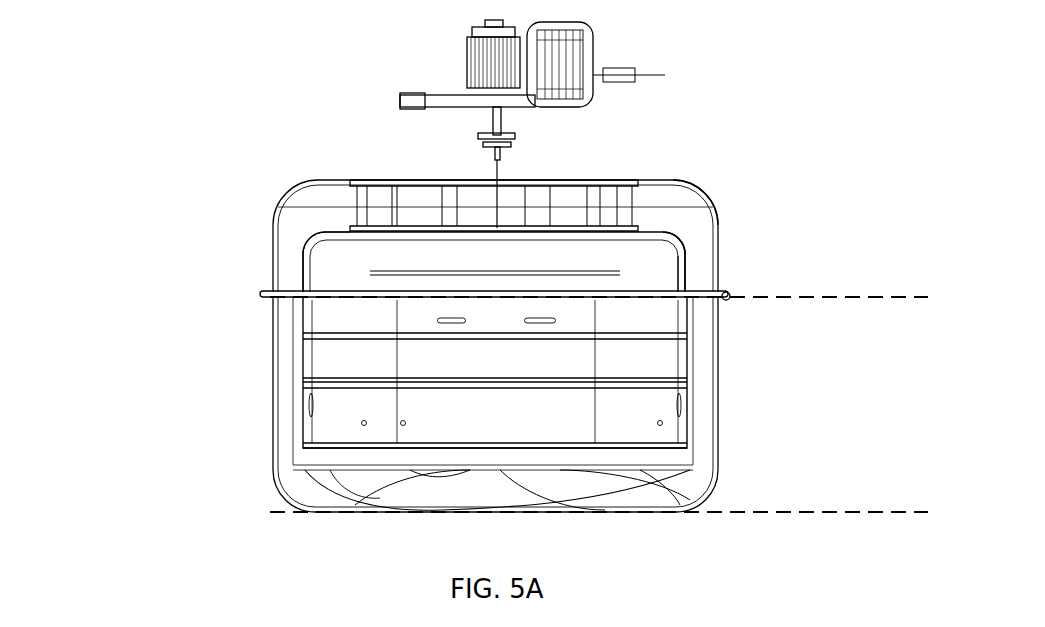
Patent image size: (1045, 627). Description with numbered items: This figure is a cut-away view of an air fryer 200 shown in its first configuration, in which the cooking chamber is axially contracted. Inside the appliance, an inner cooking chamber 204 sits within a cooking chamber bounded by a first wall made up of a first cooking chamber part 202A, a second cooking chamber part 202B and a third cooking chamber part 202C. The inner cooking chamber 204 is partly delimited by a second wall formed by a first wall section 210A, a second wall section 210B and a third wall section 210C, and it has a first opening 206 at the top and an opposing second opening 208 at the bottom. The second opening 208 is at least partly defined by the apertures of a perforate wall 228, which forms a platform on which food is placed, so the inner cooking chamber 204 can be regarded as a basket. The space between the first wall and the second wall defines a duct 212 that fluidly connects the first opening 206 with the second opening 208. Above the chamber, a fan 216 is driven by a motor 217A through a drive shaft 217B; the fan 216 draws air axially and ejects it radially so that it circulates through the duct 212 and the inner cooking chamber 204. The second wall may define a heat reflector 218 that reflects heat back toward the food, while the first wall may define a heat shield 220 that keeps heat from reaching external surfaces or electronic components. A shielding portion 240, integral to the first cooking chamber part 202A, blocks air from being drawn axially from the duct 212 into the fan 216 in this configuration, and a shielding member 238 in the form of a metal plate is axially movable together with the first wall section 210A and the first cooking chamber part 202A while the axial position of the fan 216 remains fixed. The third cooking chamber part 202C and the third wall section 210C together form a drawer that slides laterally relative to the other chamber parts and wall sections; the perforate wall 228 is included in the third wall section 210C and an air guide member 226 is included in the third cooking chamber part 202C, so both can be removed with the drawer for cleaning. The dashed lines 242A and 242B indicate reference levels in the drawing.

The air fryer 200 is at (167, 80).
The first cooking chamber part 202A is at (298, 258).
The second cooking chamber part 202B is at (272, 282).
The third cooking chamber part 202C is at (273, 428).
The inner cooking chamber 204 is at (618, 378).
The first opening 206 is at (605, 237).
The second opening 208 is at (388, 446).
The first wall section 210A is at (688, 255).
The second wall section 210B is at (680, 270).
The third wall section 210C is at (303, 370).
The duct 212 is at (697, 462).
The fan 216 is at (417, 207).
The motor 217A is at (490, 57).
The drive shaft 217B is at (497, 178).
The heat reflector 218 is at (300, 247).
The heat shield 220 is at (707, 197).
The air guide member 226 is at (577, 487).
The perforate wall 228 is at (437, 448).
The shielding member 238 is at (577, 278).
The shielding portion 240 is at (435, 180).
The upper reference plane 242A is at (893, 297).
The lower reference plane 242B is at (863, 510).